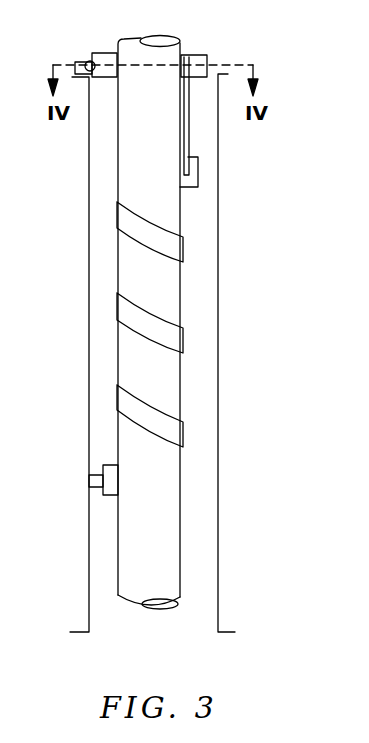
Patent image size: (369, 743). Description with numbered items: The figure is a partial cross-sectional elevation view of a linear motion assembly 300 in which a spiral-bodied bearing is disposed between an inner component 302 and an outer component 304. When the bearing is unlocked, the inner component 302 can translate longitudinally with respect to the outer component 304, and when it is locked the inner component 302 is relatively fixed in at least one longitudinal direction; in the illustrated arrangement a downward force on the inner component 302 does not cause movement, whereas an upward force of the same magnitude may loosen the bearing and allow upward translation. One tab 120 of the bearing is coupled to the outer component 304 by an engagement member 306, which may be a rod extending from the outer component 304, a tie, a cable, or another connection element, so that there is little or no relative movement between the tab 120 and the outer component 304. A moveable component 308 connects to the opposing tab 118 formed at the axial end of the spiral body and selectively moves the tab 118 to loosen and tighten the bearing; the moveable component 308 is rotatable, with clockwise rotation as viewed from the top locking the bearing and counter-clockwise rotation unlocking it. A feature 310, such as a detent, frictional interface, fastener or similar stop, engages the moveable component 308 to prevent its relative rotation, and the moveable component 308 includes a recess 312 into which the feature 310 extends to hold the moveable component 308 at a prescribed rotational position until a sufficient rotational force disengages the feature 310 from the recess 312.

The opposing tab 118 is at (197, 188).
The tab 120 is at (112, 497).
The linear motion assembly 300 is at (185, 433).
The inner component 302 is at (173, 608).
The outer component 304 is at (220, 302).
The engagement member 306 is at (100, 475).
The moveable component 308 is at (212, 41).
The feature 310 is at (84, 62).
The recess 312 is at (96, 61).